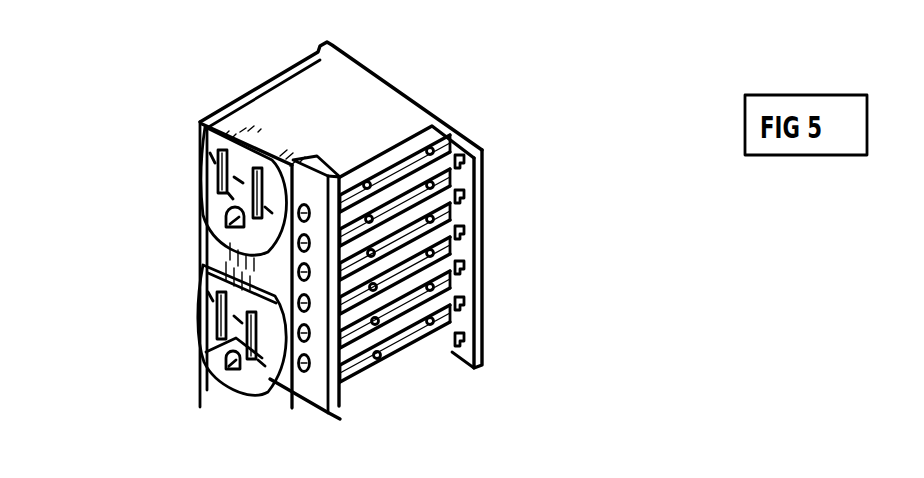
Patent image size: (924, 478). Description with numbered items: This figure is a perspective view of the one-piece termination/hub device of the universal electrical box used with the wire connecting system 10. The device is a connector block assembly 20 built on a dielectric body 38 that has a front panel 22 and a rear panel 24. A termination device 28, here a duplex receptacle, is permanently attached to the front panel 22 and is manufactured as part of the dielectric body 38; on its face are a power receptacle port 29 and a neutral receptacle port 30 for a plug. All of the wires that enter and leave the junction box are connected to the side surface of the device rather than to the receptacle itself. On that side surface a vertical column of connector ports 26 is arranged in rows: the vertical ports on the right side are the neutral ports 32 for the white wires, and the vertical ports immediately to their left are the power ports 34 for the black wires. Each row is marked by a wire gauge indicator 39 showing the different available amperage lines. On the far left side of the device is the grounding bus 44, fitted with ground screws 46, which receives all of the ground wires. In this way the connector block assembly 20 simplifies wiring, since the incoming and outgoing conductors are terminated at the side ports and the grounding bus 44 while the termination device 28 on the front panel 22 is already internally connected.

The wire connecting system 10 is at (143, 108).
The connector block assembly 20 is at (402, 93).
The front panel 22 is at (233, 250).
The rear panel 24 is at (480, 230).
The vertical column of connector ports 26 is at (432, 155).
The termination device 28 is at (205, 165).
The power receptacle port 29 is at (226, 348).
The neutral receptacle port 30 is at (205, 313).
The neutral ports 32 is at (457, 176).
The power ports 34 is at (376, 357).
The dielectric body 38 is at (302, 113).
The wire gauge indicator 39 is at (466, 266).
The grounding bus 44 is at (340, 419).
The ground screws 46 is at (300, 368).